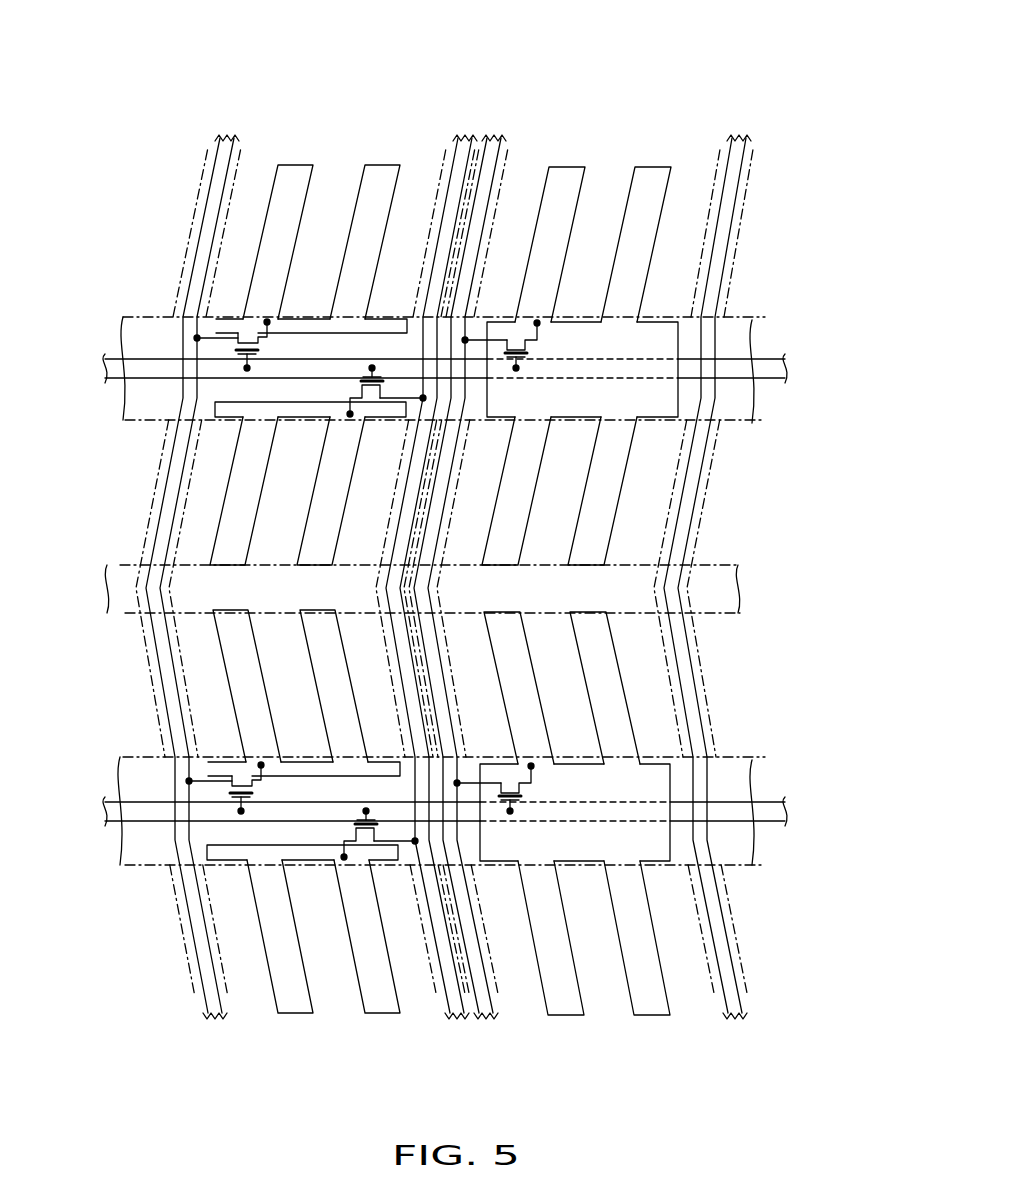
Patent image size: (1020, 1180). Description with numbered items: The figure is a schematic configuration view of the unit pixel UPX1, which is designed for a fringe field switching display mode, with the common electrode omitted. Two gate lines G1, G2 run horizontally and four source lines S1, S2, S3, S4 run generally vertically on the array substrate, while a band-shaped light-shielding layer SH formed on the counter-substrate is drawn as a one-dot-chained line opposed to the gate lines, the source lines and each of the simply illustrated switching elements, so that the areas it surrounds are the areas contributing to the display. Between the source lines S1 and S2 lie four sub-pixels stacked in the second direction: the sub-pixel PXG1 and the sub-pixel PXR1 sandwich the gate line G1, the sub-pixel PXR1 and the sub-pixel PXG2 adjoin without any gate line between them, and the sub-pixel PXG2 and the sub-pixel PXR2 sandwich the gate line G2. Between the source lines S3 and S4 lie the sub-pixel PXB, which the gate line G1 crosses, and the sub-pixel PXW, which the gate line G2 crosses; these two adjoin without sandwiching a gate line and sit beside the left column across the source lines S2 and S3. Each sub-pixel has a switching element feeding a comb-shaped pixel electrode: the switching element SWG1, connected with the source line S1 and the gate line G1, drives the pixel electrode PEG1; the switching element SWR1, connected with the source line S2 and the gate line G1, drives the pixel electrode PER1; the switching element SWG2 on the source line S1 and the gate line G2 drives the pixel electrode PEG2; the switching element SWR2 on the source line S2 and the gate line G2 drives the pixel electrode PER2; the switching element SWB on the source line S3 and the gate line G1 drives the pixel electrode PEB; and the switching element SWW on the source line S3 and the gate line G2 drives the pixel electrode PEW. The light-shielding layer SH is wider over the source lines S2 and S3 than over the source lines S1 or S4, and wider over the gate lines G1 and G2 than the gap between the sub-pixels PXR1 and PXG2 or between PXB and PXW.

The unit pixel UPX1 is at (706, 77).
The source line S1 is at (226, 136).
The source line S2 is at (463, 136).
The source line S3 is at (500, 136).
The source line S4 is at (741, 136).
The gate line G1 is at (790, 372).
The gate line G2 is at (790, 815).
The light-shielding layer SH is at (745, 986).
The sub-pixel PXG1 is at (346, 156).
The pixel electrode PEG1 is at (272, 187).
The switching element SWG1 is at (236, 317).
The sub-pixel PXR1 is at (203, 483).
The pixel electrode PER1 is at (219, 527).
The switching element SWR1 is at (380, 413).
The sub-pixel PXB is at (616, 158).
The pixel electrode PEB is at (665, 208).
The switching element SWB is at (505, 320).
The sub-pixel PXG2 is at (203, 689).
The pixel electrode PEG2 is at (222, 650).
The switching element SWG2 is at (228, 762).
The sub-pixel PXR2 is at (339, 1022).
The pixel electrode PER2 is at (265, 947).
The switching element SWR2 is at (363, 862).
The sub-pixel PXW is at (611, 1020).
The pixel electrode PEW is at (625, 697).
The switching element SWW is at (508, 838).